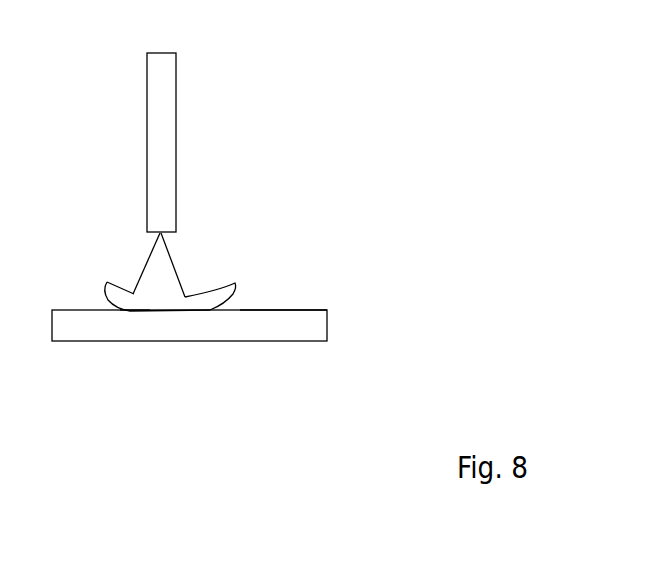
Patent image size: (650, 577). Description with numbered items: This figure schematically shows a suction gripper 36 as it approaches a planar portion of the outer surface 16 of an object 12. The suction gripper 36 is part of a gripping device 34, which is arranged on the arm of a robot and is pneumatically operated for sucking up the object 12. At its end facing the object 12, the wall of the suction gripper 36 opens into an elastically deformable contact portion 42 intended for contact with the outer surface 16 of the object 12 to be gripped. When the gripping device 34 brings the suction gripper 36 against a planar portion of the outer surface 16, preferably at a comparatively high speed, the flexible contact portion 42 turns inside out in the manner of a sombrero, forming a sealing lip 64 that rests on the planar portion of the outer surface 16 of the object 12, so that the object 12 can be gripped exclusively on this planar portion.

The object 12 is at (325, 322).
The outer surface 16 is at (306, 310).
The gripping device 34 is at (237, 177).
The suction gripper 36 is at (168, 255).
The contact portion 42 is at (117, 270).
The sealing lip 64 is at (136, 318).